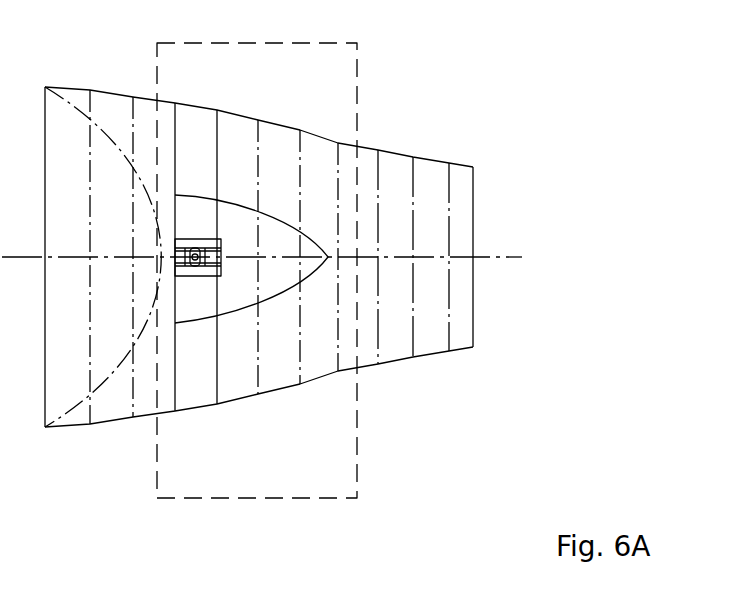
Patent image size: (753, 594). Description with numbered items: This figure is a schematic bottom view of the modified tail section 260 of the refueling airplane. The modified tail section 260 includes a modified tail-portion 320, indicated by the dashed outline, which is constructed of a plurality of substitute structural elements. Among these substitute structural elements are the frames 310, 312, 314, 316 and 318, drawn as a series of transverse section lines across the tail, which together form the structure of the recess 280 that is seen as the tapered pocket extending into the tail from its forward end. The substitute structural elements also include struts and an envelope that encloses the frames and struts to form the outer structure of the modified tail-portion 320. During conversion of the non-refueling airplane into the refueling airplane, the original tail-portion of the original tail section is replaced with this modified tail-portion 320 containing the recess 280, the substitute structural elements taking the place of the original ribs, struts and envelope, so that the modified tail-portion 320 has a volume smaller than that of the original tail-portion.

The modified tail section 260 is at (495, 123).
The modified tail-portion 320 is at (303, 43).
The recess 280 is at (231, 202).
The frame 310 is at (175, 412).
The frame 312 is at (218, 404).
The frame 314 is at (258, 394).
The frame 316 is at (302, 382).
The frame 318 is at (340, 372).